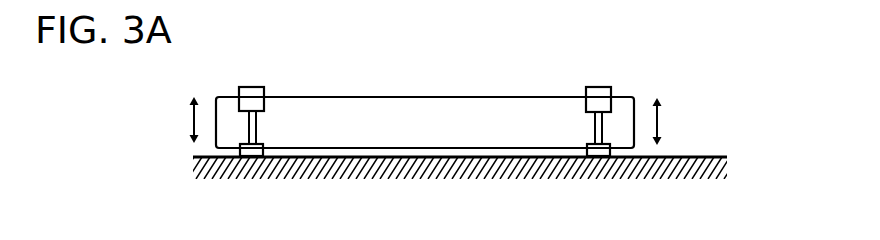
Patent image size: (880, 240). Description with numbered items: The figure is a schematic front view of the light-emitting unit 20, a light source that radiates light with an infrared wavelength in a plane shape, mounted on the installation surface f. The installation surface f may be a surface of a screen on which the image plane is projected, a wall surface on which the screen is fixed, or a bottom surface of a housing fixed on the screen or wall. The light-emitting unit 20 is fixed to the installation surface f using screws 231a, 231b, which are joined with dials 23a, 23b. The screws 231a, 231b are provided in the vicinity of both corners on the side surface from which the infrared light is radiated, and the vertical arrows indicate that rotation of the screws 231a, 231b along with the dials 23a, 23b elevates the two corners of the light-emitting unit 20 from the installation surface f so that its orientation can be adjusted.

The light-emitting unit 20 is at (425, 102).
The dial 23a is at (214, 97).
The dial 23b is at (561, 97).
The screw 231a is at (321, 169).
The screw 231b is at (529, 171).
The installation surface f is at (469, 147).